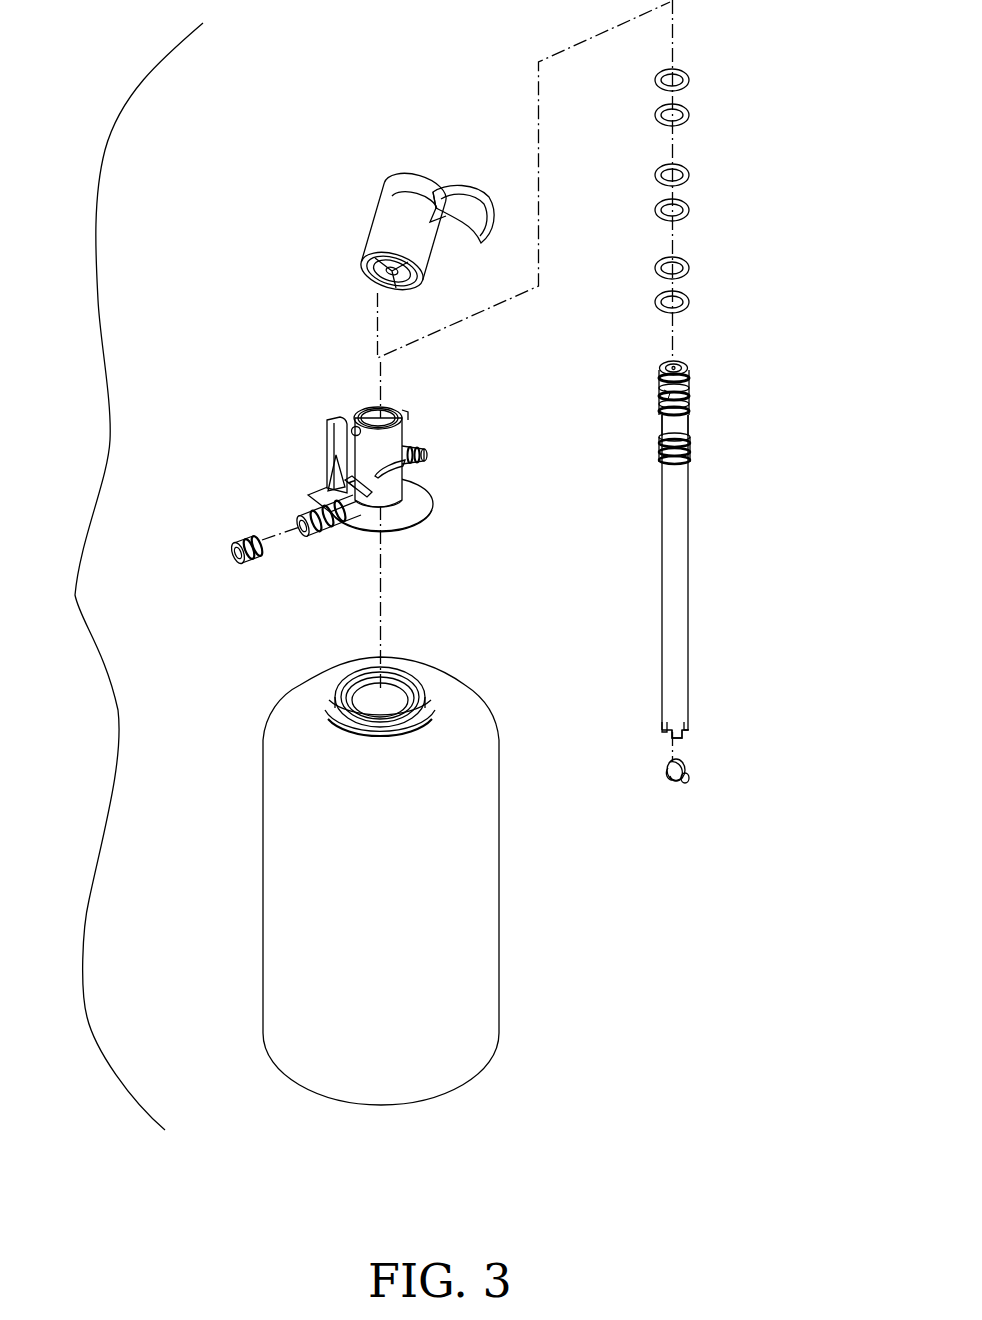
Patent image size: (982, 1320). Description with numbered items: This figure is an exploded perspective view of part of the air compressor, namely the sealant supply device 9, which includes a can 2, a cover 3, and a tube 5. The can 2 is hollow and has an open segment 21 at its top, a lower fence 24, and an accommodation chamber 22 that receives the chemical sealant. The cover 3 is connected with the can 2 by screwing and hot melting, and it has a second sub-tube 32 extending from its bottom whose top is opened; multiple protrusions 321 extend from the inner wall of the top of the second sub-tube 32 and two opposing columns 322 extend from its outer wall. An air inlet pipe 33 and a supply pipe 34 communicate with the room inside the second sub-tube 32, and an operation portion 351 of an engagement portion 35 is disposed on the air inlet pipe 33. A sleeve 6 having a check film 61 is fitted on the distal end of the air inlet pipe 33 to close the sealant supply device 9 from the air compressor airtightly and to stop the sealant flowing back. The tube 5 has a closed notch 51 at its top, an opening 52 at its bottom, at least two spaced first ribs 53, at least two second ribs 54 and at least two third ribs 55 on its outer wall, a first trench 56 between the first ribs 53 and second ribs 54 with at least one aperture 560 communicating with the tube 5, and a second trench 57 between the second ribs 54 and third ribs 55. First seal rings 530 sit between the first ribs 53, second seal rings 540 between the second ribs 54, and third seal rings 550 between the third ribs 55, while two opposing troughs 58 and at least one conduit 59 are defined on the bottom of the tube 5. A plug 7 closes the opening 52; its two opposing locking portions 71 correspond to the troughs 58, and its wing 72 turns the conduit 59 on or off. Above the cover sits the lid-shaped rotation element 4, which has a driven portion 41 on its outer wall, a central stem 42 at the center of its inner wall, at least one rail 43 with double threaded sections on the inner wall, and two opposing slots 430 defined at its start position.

The can 2 is at (400, 900).
The open segment 21 is at (423, 697).
The accommodation chamber 22 is at (328, 682).
The lower fence 24 is at (425, 1105).
The cover 3 is at (339, 476).
The second sub-tube 32 is at (356, 427).
The protrusions 321 is at (372, 403).
The columns 322 is at (352, 430).
The air inlet pipe 33 is at (312, 515).
The supply pipe 34 is at (422, 449).
The engagement portion 35 is at (340, 530).
The operation portion 351 is at (330, 445).
The rotation element 4 is at (364, 202).
The driven portion 41 is at (464, 203).
The central stem 42 is at (374, 262).
The rail 43 is at (364, 271).
The slots 430 is at (372, 284).
The tube 5 is at (685, 545).
The closed notch 51 is at (676, 365).
The opening 52 is at (688, 729).
The first ribs 53 is at (689, 372).
The second ribs 54 is at (689, 409).
The third ribs 55 is at (690, 449).
The first trench 56 is at (689, 396).
The aperture 560 is at (667, 395).
The second trench 57 is at (670, 428).
The troughs 58 is at (686, 733).
The conduit 59 is at (666, 728).
The first seal rings 530 is at (690, 80).
The second seal rings 540 is at (690, 175).
The third seal rings 550 is at (690, 268).
The sleeve 6 is at (197, 528).
The check film 61 is at (232, 556).
The plug 7 is at (659, 790).
The locking portions 71 is at (690, 780).
The wing 72 is at (668, 776).
The sealant supply device 9 is at (127, 576).